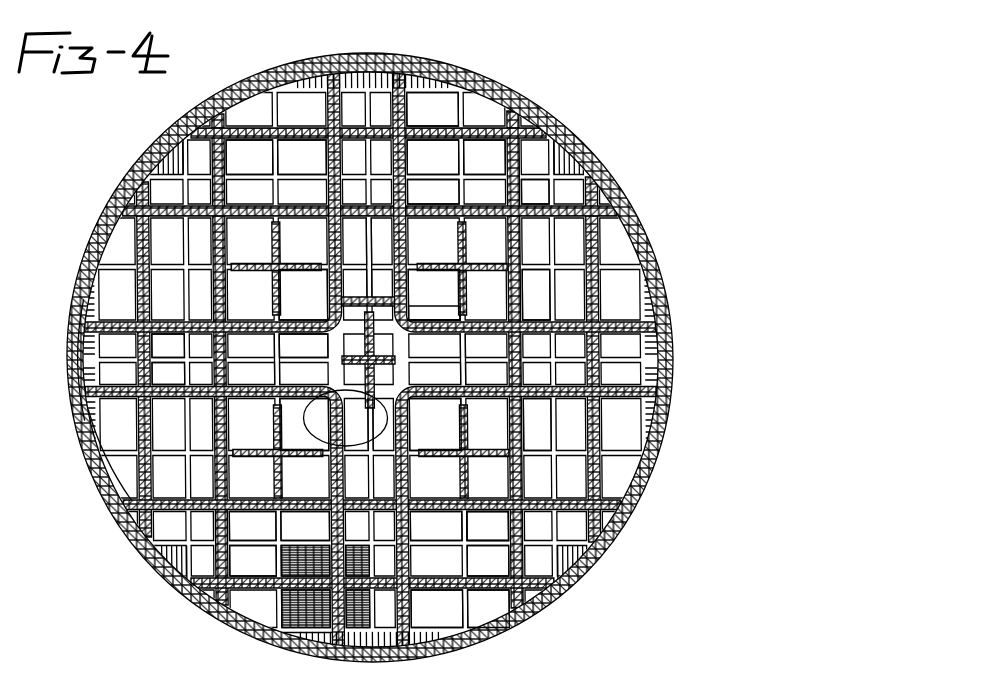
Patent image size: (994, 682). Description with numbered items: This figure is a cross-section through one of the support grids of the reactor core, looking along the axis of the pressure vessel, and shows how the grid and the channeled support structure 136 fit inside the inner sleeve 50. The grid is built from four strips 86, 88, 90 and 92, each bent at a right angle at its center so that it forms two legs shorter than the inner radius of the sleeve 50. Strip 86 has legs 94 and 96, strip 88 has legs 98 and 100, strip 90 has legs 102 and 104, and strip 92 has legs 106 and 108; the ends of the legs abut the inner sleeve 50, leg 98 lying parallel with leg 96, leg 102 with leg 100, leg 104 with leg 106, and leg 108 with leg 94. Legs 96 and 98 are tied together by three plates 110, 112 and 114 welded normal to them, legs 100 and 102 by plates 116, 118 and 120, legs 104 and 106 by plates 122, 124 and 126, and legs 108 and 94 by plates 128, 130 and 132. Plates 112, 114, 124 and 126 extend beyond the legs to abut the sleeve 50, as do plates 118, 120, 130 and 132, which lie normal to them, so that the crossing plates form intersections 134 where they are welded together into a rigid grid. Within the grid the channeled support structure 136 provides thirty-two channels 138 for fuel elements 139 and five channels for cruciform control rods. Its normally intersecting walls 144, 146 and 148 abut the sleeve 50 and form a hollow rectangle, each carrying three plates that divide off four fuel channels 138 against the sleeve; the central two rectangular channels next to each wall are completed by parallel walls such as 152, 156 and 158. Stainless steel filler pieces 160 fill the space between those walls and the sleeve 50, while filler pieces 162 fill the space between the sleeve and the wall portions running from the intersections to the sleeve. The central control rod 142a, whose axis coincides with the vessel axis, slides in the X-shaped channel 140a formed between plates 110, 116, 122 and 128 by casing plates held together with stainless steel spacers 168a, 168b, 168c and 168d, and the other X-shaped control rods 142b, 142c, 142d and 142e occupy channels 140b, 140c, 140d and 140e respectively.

The inner sleeve 50 is at (656, 452).
The strip 86 is at (657, 392).
The strip 88 is at (408, 72).
The strip 90 is at (337, 72).
The strip 92 is at (86, 392).
The leg 94 is at (409, 522).
The leg 96 is at (580, 400).
The leg 98 is at (560, 322).
The leg 100 is at (398, 160).
The leg 102 is at (328, 158).
The leg 104 is at (152, 344).
The leg 106 is at (188, 385).
The leg 108 is at (336, 520).
The plate 110 is at (441, 318).
The plate 112 is at (522, 352).
The plate 114 is at (598, 350).
The plate 116 is at (397, 302).
The plate 118 is at (372, 207).
The plate 120 is at (380, 130).
The plate 122 is at (318, 350).
The plate 124 is at (224, 345).
The plate 126 is at (146, 345).
The plate 128 is at (346, 415).
The plate 130 is at (348, 511).
The plate 132 is at (386, 580).
The intersection 134 is at (232, 152).
The channeled support structure 136 is at (112, 462).
The channel 138 is at (286, 597).
The fuel element 139 is at (300, 646).
The channel 140a is at (374, 374).
The channel 140b is at (466, 297).
The channel 140c is at (282, 293).
The channel 140d is at (283, 477).
The channel 140e is at (465, 418).
The cruciform control rod 142a is at (375, 344).
The X-shaped control rod 142b is at (464, 257).
The X-shaped control rod 142c is at (279, 264).
The X-shaped control rod 142d is at (244, 460).
The X-shaped control rod 142e is at (464, 460).
The wall 144 is at (468, 548).
The wall 146 is at (546, 184).
The wall 148 is at (440, 182).
The wall 152 is at (447, 628).
The wall 156 is at (406, 98).
The wall 158 is at (92, 436).
The stainless steel filler piece 160 is at (320, 72).
The stainless steel filler piece 162 is at (166, 150).
The stainless steel spacer 168a is at (375, 450).
The stainless steel spacer 168b is at (464, 356).
The stainless steel spacer 168c is at (371, 277).
The stainless steel spacer 168d is at (276, 372).